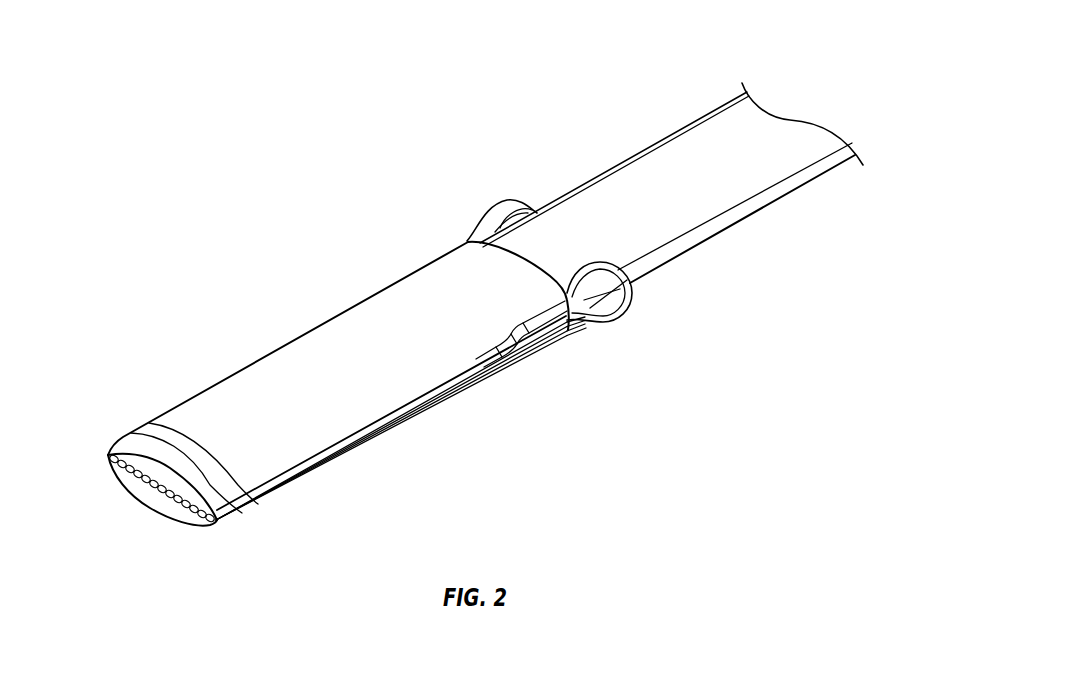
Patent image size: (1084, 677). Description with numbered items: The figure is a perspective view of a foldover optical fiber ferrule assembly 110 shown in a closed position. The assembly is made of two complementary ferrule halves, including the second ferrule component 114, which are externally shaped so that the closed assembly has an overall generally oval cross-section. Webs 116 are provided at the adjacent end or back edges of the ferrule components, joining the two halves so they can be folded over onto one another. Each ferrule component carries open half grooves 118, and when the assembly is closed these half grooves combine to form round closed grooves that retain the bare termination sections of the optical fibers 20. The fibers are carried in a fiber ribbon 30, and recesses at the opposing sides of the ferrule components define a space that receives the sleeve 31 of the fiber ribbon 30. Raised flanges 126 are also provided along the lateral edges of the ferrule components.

The foldover optical fiber ferrule assembly 110 is at (410, 148).
The second ferrule component 114 is at (304, 339).
The webs 116 is at (513, 205).
The open half grooves 118 is at (145, 485).
The optical fibers 20 is at (168, 493).
The raised flanges 126 is at (382, 437).
The fiber ribbon 30 is at (745, 232).
The sleeve 31 is at (680, 140).